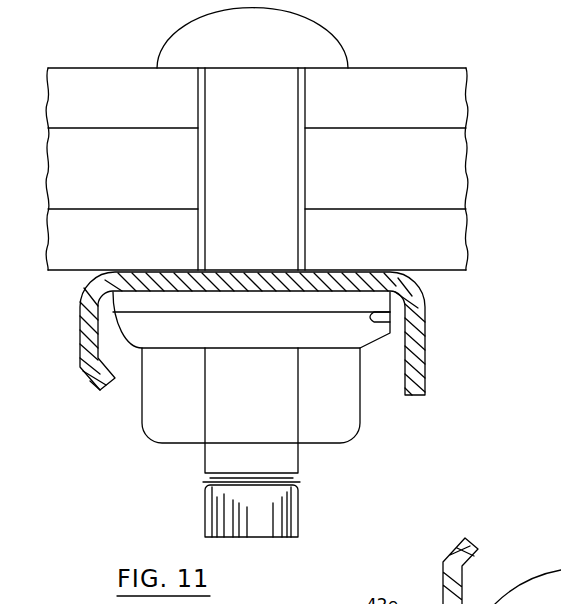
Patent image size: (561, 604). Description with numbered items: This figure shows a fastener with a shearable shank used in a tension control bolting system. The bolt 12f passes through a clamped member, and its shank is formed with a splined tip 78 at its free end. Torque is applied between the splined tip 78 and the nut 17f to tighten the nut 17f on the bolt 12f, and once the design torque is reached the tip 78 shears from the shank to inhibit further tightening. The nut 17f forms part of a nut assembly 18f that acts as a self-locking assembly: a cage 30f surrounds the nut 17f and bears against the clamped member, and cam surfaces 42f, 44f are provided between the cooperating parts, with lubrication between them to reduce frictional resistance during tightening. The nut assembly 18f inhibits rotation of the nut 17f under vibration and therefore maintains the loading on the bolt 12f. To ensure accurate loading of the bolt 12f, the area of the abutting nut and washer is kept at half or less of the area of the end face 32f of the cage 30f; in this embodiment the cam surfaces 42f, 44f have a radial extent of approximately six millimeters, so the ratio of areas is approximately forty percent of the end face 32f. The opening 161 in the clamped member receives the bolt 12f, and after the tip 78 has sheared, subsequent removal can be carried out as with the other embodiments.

The bolt 12f is at (158, 68).
The bore hole 161 is at (284, 88).
The cam surface 42f is at (283, 269).
The cam surface 44f is at (378, 320).
The nut assembly 18f is at (285, 313).
The end face 32f is at (78, 281).
The cage 30f is at (82, 348).
The nut 17f is at (148, 424).
The splined tip 78 is at (206, 499).